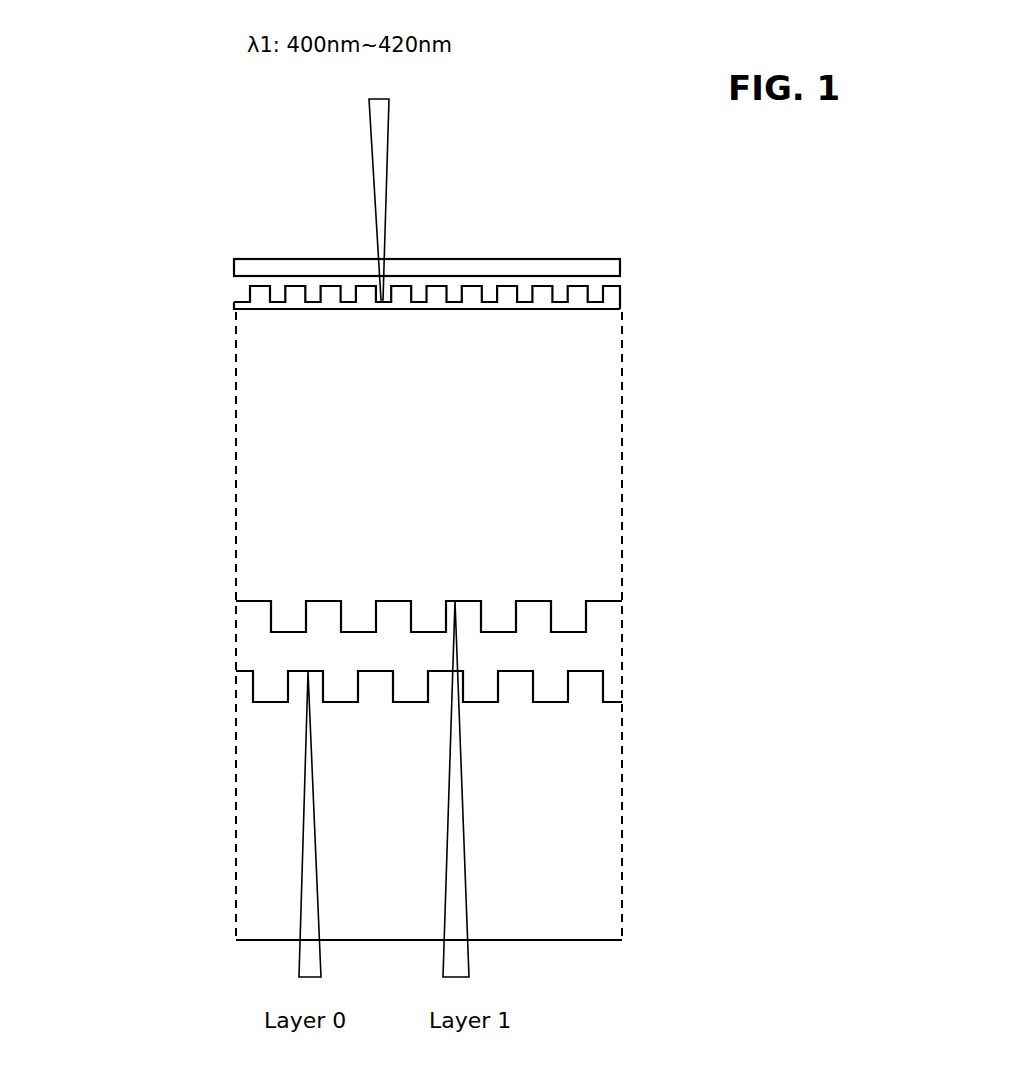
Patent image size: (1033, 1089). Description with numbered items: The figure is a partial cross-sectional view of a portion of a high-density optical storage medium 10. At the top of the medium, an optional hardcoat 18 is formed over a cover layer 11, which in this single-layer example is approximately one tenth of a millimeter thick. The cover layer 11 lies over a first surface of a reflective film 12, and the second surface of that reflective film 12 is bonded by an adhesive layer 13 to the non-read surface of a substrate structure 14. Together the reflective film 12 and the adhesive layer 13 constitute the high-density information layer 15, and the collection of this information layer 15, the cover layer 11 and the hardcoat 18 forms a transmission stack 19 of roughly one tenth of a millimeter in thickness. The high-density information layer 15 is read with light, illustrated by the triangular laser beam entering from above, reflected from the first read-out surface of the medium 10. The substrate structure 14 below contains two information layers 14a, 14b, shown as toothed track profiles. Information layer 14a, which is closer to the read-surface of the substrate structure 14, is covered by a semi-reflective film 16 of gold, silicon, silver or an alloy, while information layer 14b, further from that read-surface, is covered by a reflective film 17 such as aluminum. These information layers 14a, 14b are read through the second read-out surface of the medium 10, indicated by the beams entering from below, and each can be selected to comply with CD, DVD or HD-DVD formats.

The high-density optical storage medium 10 is at (59, 174).
The cover layer 11 is at (523, 288).
The reflective film 12 is at (620, 285).
The adhesive layer 13 is at (620, 296).
The substrate structure 14 is at (215, 313).
The information layer 14a is at (553, 682).
The information layer 14b is at (500, 610).
The high-density information layer 15 is at (752, 258).
The semi-reflective film 16 is at (622, 700).
The reflective film 17 is at (622, 600).
The hardcoat 18 is at (452, 268).
The transmission stack 19 is at (215, 264).